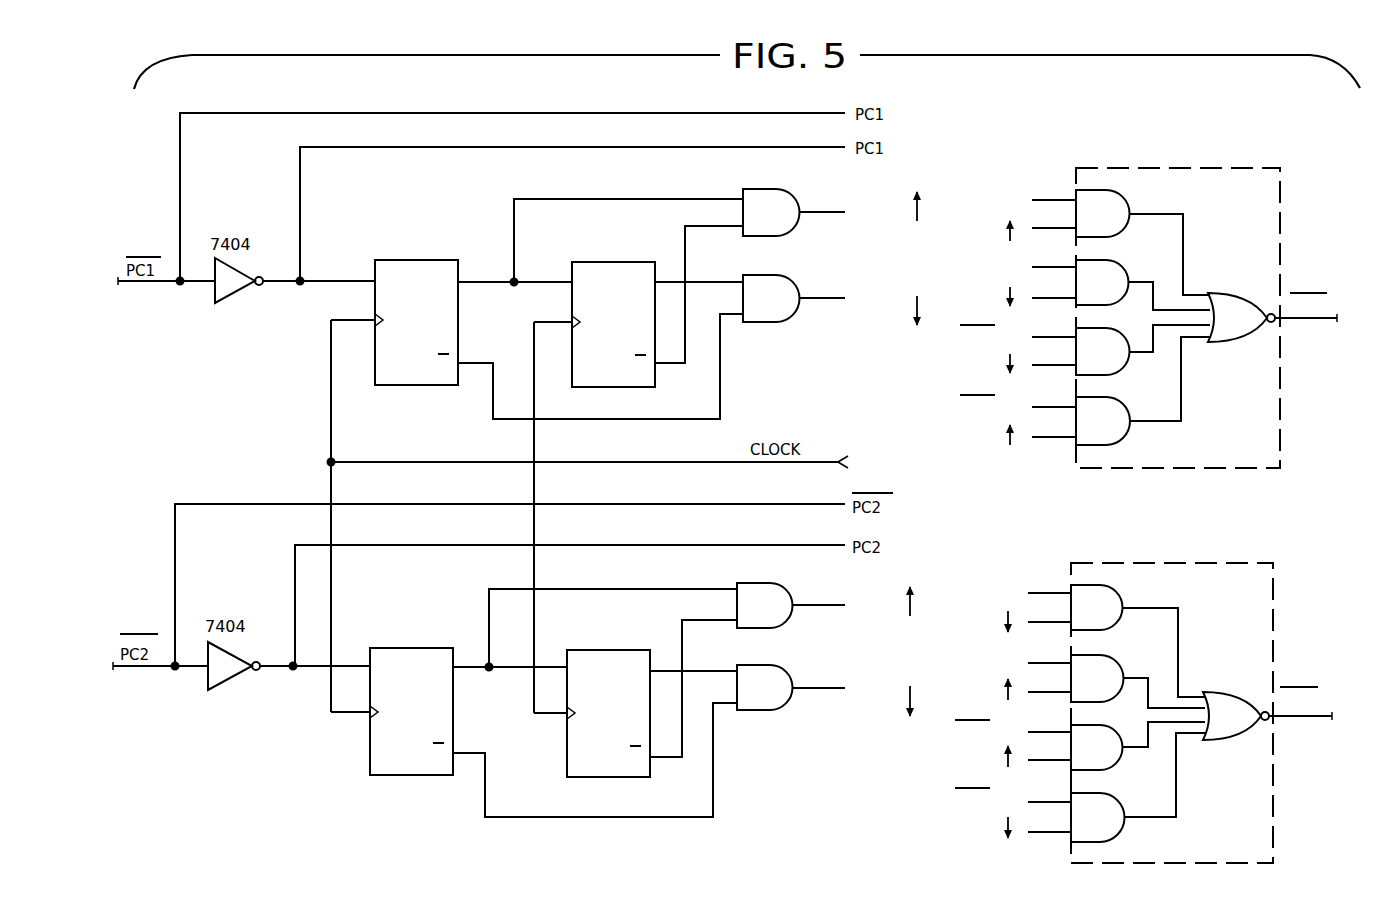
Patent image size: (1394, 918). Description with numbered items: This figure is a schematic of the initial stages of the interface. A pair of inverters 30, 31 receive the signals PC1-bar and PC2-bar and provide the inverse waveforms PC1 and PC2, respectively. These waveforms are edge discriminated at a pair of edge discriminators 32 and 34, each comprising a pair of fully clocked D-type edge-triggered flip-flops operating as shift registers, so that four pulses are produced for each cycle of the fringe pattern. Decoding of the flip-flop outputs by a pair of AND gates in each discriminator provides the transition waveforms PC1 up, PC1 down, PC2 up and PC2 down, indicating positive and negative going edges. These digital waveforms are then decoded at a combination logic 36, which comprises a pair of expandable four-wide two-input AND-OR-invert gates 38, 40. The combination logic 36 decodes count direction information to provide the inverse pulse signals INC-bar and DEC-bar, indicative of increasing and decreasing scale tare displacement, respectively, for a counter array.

The inverter 30 is at (233, 292).
The inverter 31 is at (226, 680).
The edge discriminator 32 is at (398, 207).
The edge discriminator 34 is at (422, 608).
The combination logic 36 is at (1294, 153).
The AND OR invert gate 38 is at (1160, 168).
The AND OR invert gate 40 is at (1175, 563).